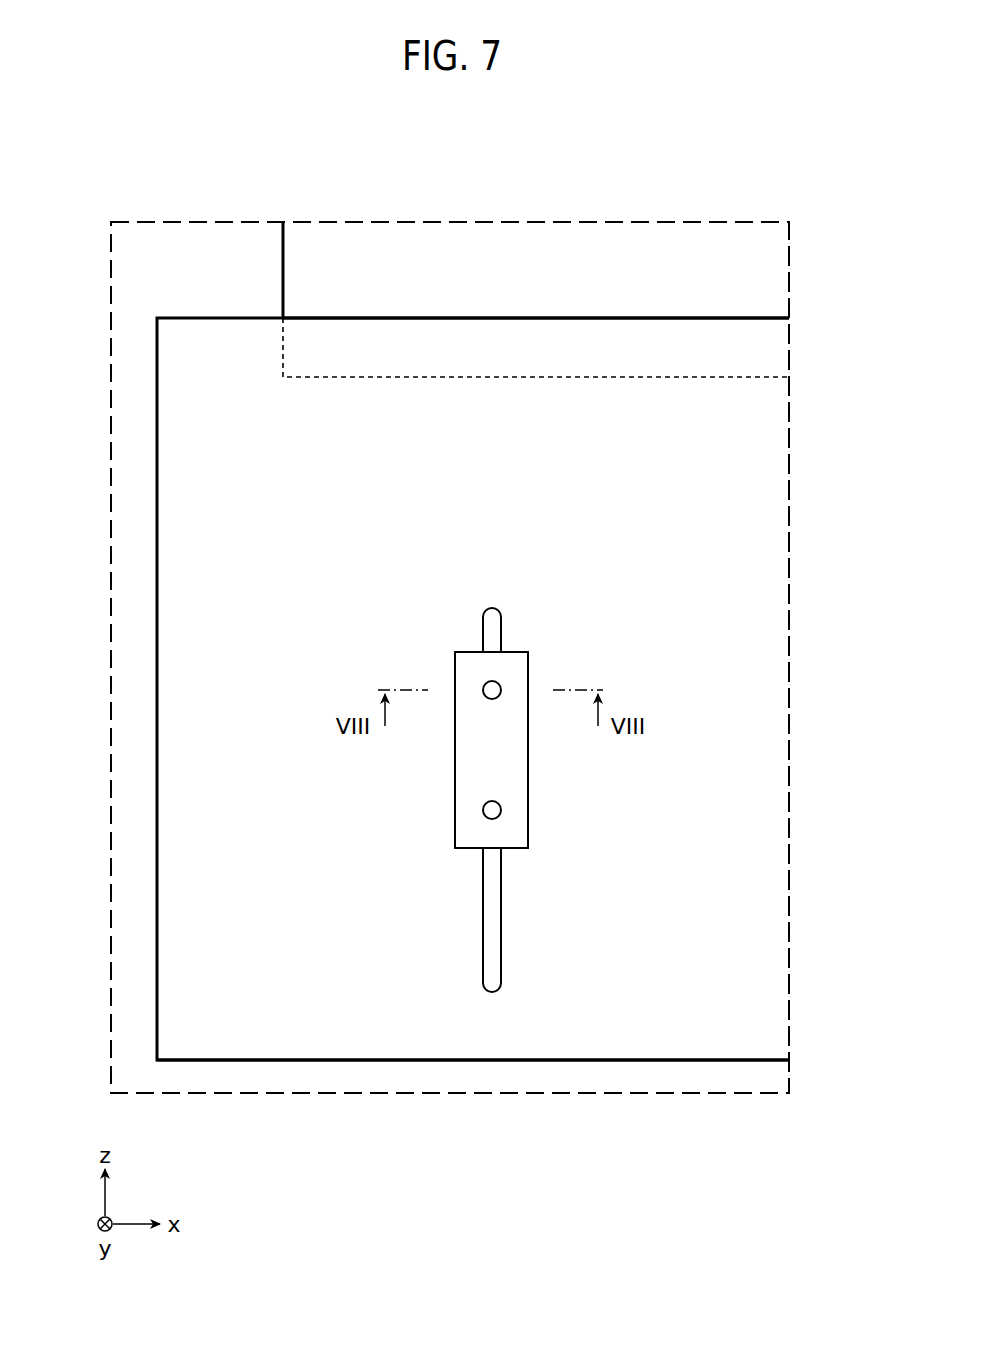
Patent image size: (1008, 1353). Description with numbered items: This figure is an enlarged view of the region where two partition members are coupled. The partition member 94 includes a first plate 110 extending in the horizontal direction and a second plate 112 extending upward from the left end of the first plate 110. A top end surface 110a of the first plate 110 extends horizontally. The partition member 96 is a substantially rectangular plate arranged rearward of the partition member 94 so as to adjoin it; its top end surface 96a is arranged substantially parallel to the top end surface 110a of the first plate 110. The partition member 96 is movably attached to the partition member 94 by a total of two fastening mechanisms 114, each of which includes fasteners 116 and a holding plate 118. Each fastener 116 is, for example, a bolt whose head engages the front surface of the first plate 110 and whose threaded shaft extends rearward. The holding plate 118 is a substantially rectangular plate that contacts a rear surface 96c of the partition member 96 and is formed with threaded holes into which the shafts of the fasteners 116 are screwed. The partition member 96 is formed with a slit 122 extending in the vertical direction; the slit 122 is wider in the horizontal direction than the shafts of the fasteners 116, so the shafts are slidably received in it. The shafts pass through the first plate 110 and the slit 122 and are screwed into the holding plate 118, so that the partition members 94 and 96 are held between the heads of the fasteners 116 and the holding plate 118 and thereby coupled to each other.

The partition member 94 is at (286, 254).
The partition member 96 is at (175, 685).
The top end surface 96a is at (380, 315).
The rear surface 96c is at (690, 958).
The first plate 110 is at (705, 535).
The top end surface 110a is at (537, 375).
The second plate 112 is at (202, 247).
The fastening mechanism 114 is at (578, 829).
The fastener 116 is at (486, 705).
The holding plate 118 is at (515, 787).
The slit 122 is at (498, 890).